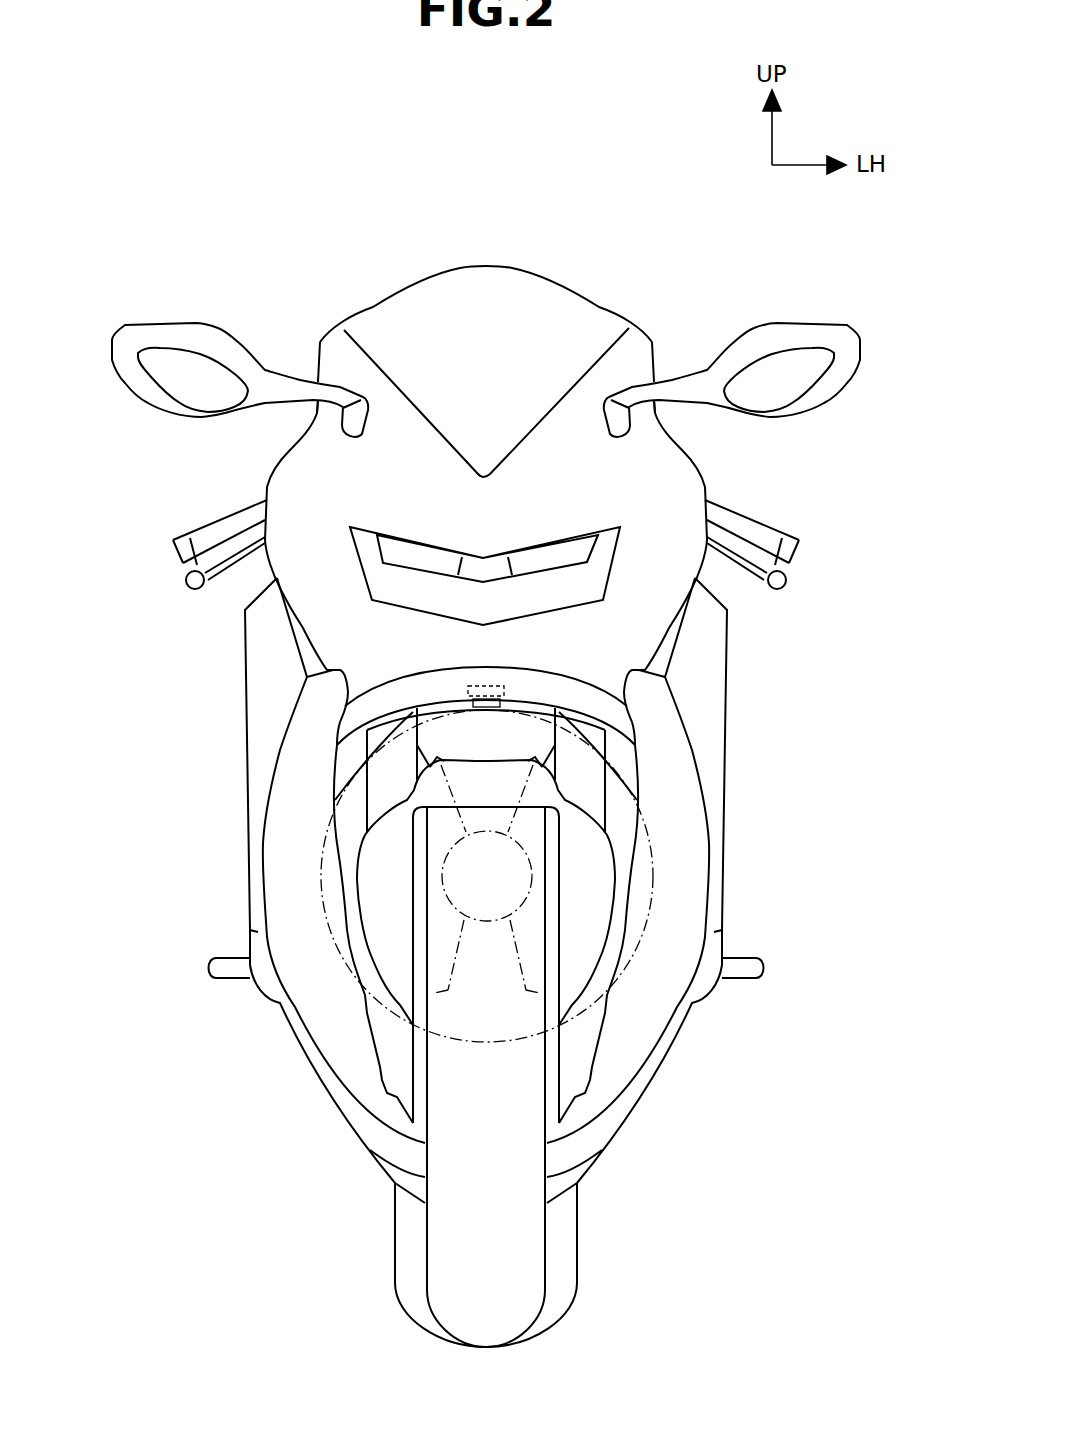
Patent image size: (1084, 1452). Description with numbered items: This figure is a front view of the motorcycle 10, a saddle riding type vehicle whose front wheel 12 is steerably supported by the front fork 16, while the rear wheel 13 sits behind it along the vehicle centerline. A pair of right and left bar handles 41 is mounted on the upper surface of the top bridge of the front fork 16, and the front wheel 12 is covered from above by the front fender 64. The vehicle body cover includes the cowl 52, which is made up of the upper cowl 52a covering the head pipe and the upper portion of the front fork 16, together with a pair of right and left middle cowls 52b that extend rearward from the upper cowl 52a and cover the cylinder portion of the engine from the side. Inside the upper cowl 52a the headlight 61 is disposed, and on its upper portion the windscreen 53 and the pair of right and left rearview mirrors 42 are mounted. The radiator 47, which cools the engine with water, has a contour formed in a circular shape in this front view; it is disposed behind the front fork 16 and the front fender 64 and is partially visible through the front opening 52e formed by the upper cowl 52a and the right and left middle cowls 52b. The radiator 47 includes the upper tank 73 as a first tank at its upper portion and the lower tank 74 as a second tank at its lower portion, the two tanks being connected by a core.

The motorcycle 10 is at (225, 216).
The front wheel 12 is at (457, 1262).
The rear wheel 13 is at (557, 1262).
The front fork 16 is at (355, 795).
The bar handles 41 is at (203, 540).
The rearview mirrors 42 is at (170, 337).
The radiator 47 is at (627, 763).
The cowl 52 is at (294, 589).
The upper cowl 52a is at (543, 455).
The middle cowls 52b is at (290, 828).
The front opening 52e is at (350, 917).
The windscreen 53 is at (463, 297).
The headlight 61 is at (601, 567).
The front fender 64 is at (587, 867).
The upper tank 73 is at (355, 773).
The lower tank 74 is at (647, 1000).